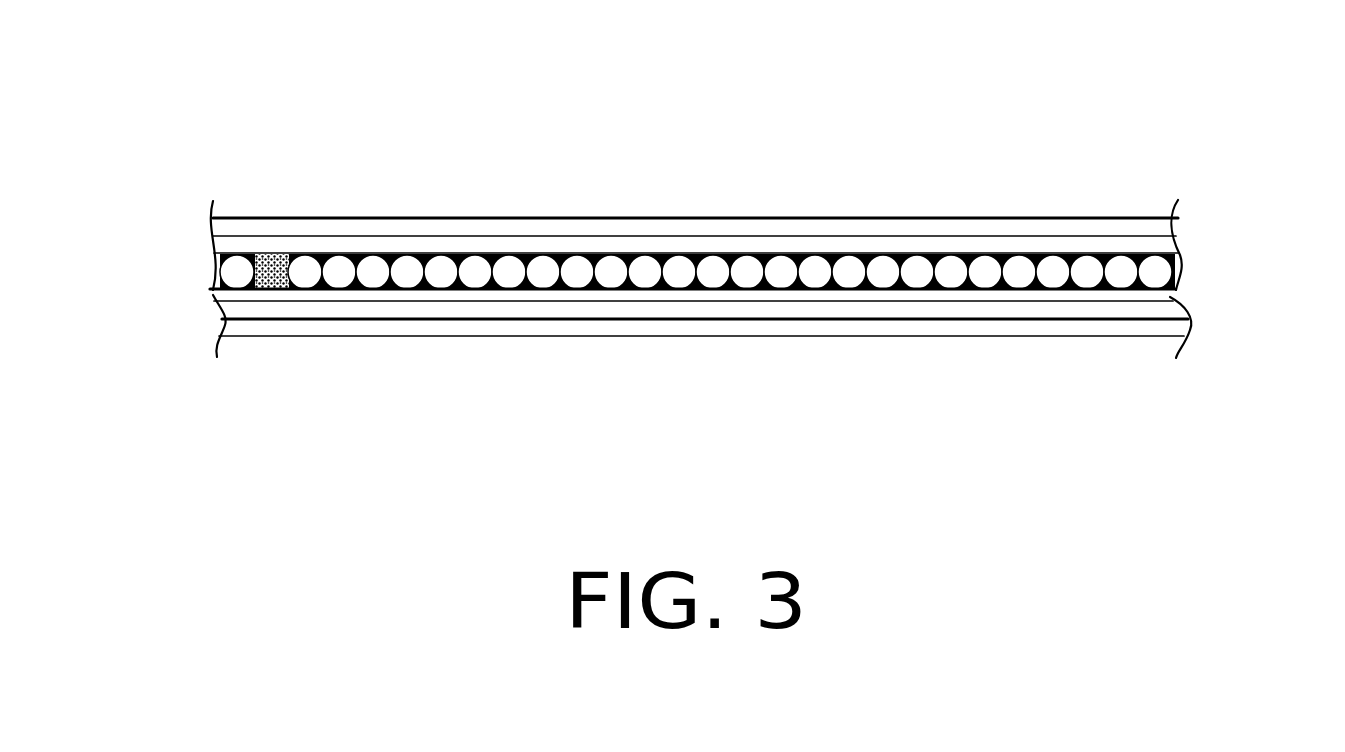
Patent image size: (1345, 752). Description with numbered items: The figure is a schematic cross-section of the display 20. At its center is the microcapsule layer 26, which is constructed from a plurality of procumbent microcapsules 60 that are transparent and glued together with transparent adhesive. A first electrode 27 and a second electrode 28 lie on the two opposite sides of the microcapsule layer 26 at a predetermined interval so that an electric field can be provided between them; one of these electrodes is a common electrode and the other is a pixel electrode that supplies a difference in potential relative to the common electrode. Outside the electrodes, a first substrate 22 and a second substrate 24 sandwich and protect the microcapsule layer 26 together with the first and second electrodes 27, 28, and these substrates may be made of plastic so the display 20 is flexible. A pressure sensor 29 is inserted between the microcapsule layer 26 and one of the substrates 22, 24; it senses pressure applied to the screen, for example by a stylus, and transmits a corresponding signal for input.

The display 20 is at (716, 75).
The first substrate 22 is at (1162, 228).
The second substrate 24 is at (1093, 329).
The microcapsule layer 26 is at (205, 265).
The first electrode 27 is at (1167, 245).
The second electrode 28 is at (1168, 298).
The pressure sensor 29 is at (1172, 312).
The microcapsules 60 is at (238, 270).